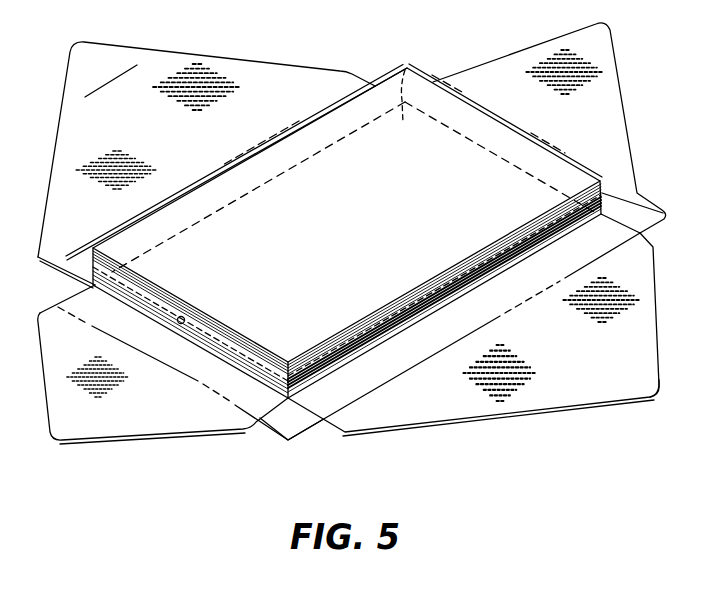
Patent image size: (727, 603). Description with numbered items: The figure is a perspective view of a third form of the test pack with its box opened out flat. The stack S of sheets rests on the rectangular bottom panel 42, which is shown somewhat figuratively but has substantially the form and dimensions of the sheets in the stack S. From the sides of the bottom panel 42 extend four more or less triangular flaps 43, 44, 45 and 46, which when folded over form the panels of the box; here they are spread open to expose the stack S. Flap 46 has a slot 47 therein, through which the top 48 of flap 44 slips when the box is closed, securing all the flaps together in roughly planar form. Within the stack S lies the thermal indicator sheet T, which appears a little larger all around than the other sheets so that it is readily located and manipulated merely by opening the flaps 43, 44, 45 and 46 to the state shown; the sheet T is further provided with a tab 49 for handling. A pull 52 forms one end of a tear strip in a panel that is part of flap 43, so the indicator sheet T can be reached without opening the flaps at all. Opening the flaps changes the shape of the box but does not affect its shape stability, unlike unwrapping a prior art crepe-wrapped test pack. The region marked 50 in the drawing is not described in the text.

The rectangular bottom panel 42 is at (408, 69).
The flap 43 is at (156, 428).
The flap 44 is at (585, 361).
The flap 45 is at (614, 134).
The flap 46 is at (230, 154).
The slot 47 is at (119, 75).
The top of flap 48 is at (653, 386).
The tab 49 is at (187, 328).
The base panel 50 is at (124, 323).
The pull 52 is at (296, 421).
The stack of sheets S is at (383, 272).
The thermal indicator sheet T is at (468, 277).